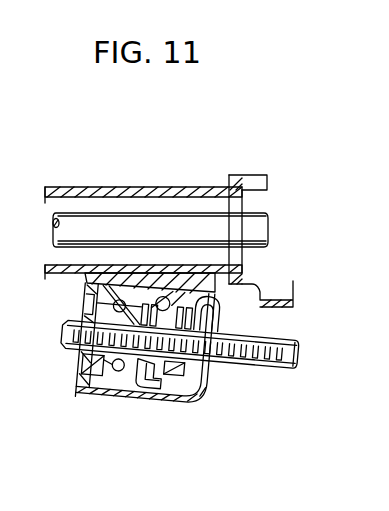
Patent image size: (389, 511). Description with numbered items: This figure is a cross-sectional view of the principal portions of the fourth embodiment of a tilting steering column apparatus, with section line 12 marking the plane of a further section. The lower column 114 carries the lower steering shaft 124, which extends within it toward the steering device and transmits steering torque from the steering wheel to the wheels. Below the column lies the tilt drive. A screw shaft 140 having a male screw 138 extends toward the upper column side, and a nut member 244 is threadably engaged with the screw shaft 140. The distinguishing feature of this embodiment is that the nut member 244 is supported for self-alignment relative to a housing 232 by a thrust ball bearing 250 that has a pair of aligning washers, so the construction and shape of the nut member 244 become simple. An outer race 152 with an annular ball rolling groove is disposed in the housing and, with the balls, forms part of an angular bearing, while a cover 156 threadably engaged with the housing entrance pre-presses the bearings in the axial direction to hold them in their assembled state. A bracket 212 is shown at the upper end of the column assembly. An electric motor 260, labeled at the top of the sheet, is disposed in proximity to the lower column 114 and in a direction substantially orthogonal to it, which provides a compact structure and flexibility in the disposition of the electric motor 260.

The section line 12- 12 is at (165, 181).
The lower column 114 is at (81, 187).
The lower steering shaft 124 is at (253, 225).
The male screw 138 is at (241, 362).
The screw shaft 140 is at (283, 350).
The outer race 152 is at (95, 397).
The cover 156 is at (82, 289).
The mounting bracket 212 is at (266, 188).
The housing 232 is at (198, 398).
The nut member 244 is at (134, 378).
The thrust ball bearing 250 is at (108, 270).
The electric motor 260 is at (362, 7).